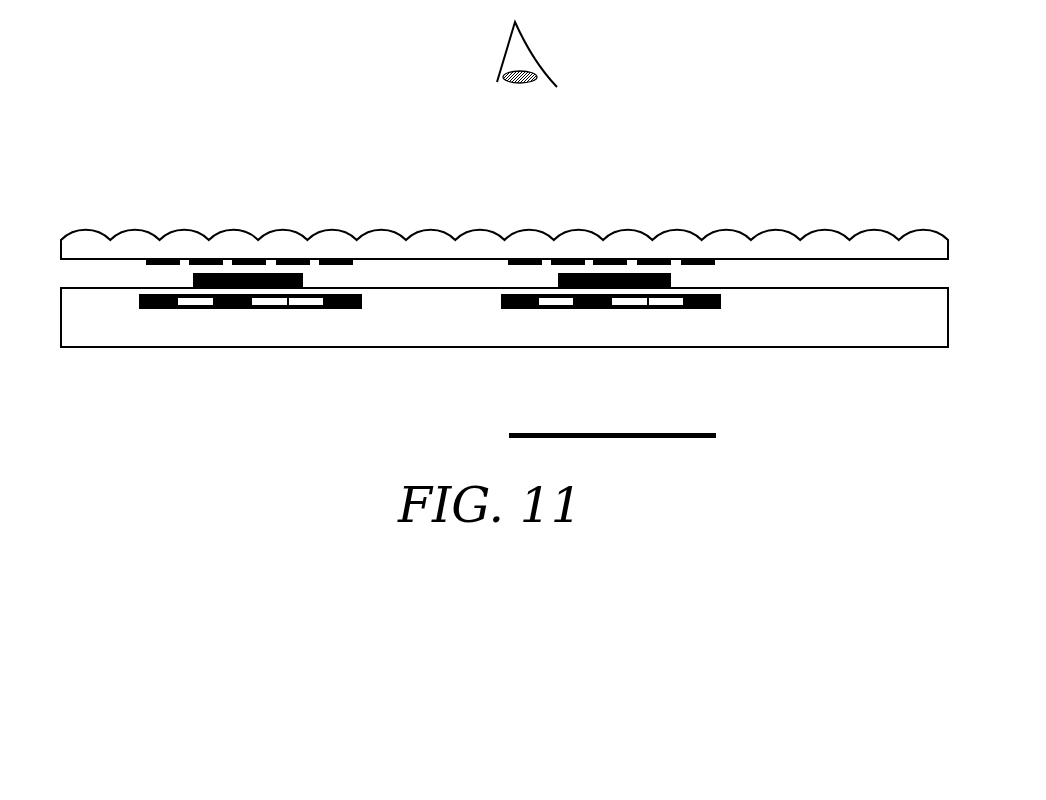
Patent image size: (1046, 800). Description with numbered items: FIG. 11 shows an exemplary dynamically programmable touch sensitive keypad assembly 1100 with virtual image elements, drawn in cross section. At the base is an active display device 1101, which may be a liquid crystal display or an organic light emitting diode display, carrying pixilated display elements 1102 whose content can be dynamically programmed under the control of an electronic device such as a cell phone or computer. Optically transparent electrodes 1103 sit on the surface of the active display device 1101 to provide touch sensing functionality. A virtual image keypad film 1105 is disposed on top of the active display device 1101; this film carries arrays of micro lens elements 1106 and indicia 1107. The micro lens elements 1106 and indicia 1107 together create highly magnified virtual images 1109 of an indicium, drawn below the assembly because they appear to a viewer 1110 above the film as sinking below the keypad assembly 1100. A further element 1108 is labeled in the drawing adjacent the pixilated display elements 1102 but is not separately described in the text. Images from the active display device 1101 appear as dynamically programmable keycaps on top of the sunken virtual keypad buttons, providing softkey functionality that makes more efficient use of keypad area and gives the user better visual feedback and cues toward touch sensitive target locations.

The dynamically programmable touch sensitive keypad assembly 1100 is at (495, 300).
The active display device 1101 is at (408, 330).
The pixilated display elements 1102 is at (226, 305).
The optically transparent electrodes 1103 is at (210, 275).
The virtual image keypad film 1105 is at (504, 211).
The micro lens elements 1106 is at (333, 232).
The indicia 1107 is at (243, 262).
The pixel electrode structure 1108 is at (721, 299).
The virtual images 1109 is at (682, 430).
The viewer 1110 is at (508, 40).